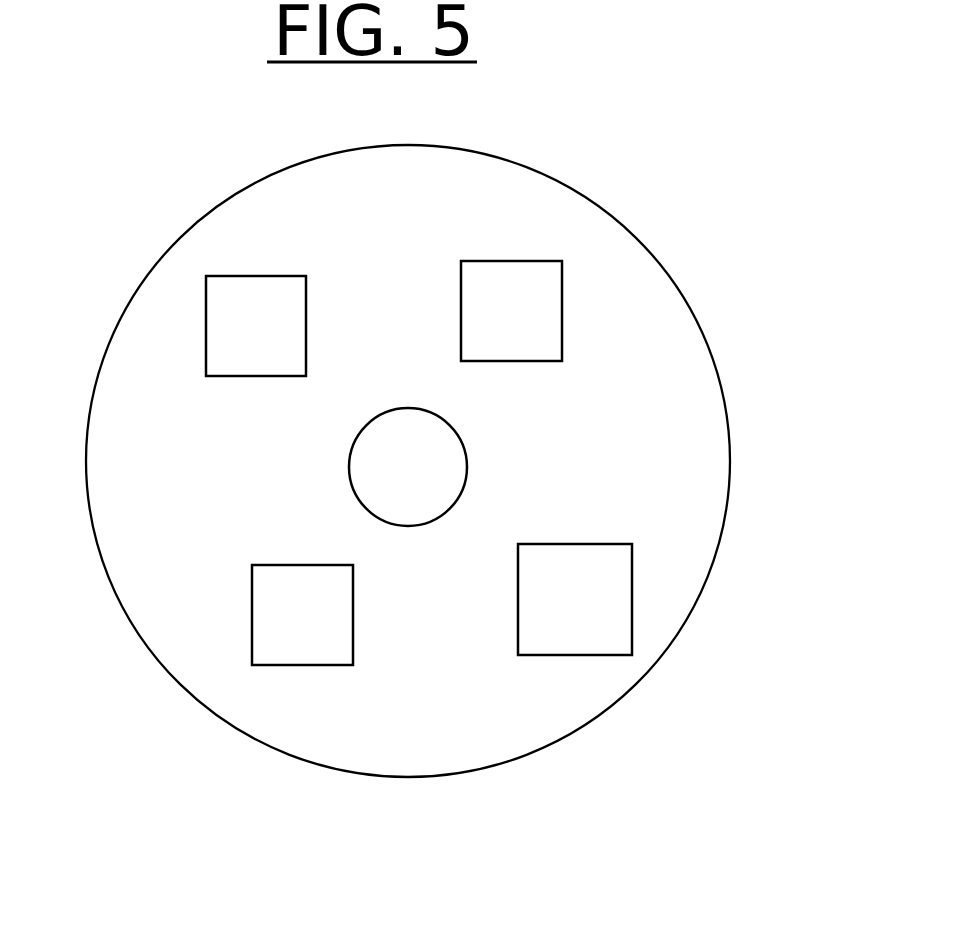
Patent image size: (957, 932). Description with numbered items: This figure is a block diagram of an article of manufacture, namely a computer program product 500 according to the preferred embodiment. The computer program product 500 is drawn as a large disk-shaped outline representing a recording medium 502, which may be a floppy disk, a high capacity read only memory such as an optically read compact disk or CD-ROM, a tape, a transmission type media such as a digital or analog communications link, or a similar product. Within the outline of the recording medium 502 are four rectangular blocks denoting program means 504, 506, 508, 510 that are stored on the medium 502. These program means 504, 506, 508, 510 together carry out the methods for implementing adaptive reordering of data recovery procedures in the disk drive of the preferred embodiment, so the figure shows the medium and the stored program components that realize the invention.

The computer program product 500 is at (683, 256).
The recording medium 502 is at (143, 282).
The program means 504 is at (575, 599).
The program means 506 is at (511, 311).
The program means 508 is at (302, 615).
The program means 510 is at (256, 326).